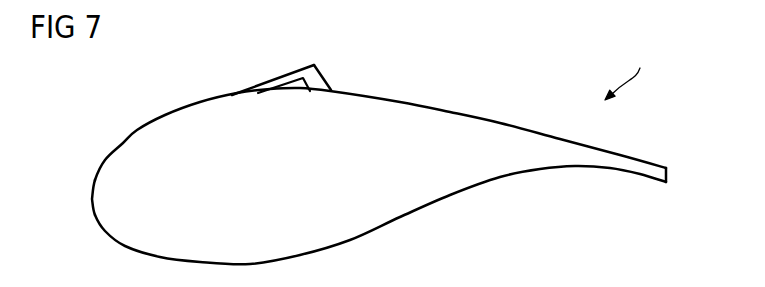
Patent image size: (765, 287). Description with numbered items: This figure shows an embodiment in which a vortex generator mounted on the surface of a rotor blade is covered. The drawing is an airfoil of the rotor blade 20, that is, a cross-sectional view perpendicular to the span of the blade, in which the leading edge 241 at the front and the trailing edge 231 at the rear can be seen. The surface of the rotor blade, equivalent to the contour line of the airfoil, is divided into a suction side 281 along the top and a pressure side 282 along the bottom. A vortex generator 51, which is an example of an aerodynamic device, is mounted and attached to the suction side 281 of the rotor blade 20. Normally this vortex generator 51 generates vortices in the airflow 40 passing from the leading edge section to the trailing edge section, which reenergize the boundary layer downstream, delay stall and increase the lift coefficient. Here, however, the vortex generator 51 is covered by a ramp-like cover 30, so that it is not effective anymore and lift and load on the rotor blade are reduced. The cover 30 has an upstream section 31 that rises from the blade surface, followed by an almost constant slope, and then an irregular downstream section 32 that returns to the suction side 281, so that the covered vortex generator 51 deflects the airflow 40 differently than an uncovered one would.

The rotor blade 20 is at (380, 160).
The leading edge 241 is at (92, 199).
The trailing edge 231 is at (668, 176).
The suction side 281 is at (433, 107).
The pressure side 282 is at (443, 200).
The cover 30 is at (296, 79).
The first side of vortex generator fin 31 is at (276, 75).
The downstream section 32 is at (329, 80).
The vortex generator 51 is at (297, 89).
The air flow direction 40 is at (628, 71).